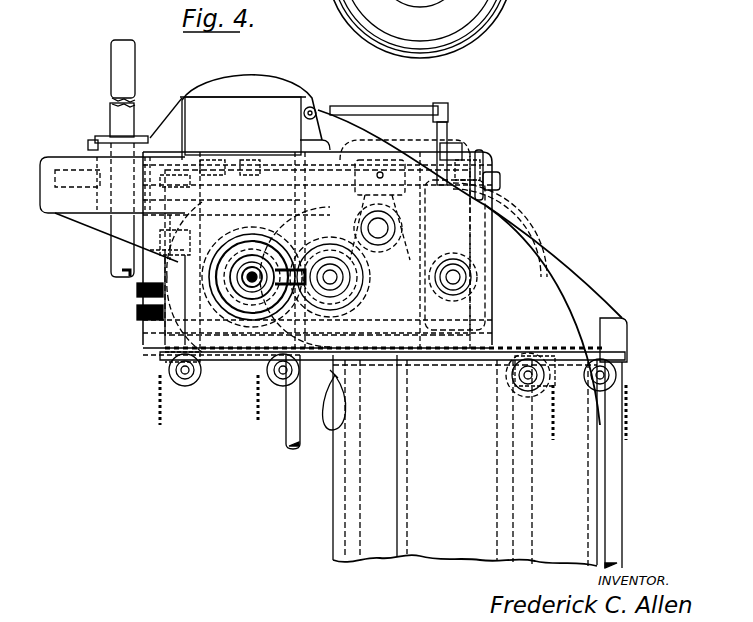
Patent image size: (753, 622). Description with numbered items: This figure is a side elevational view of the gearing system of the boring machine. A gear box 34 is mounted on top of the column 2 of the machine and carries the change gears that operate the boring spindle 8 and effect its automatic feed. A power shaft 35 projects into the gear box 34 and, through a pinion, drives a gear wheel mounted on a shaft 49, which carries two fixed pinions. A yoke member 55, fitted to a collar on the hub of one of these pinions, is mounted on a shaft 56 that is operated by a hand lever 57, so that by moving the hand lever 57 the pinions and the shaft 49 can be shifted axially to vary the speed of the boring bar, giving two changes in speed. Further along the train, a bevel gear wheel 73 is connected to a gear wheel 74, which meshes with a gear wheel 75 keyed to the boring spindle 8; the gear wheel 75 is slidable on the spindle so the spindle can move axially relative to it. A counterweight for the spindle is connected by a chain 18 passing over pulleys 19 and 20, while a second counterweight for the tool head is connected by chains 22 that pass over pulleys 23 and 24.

The column 2 is at (430, 540).
The boring spindle 8 is at (130, 92).
The chain 18 is at (628, 395).
The pulley 19 is at (600, 425).
The pulley 20 is at (187, 393).
The chains 22 is at (553, 434).
The pulley 23 is at (510, 383).
The pulley 24 is at (275, 398).
The gear box 34 is at (520, 262).
The power shaft 35 is at (447, 289).
The shaft 49 is at (345, 178).
The yoke member 55 is at (382, 165).
The shaft 56 is at (302, 143).
The hand lever 57 is at (170, 238).
The bevel gear wheel 73 is at (175, 252).
The gear wheel 74 is at (193, 185).
The gear wheel 75 is at (73, 175).